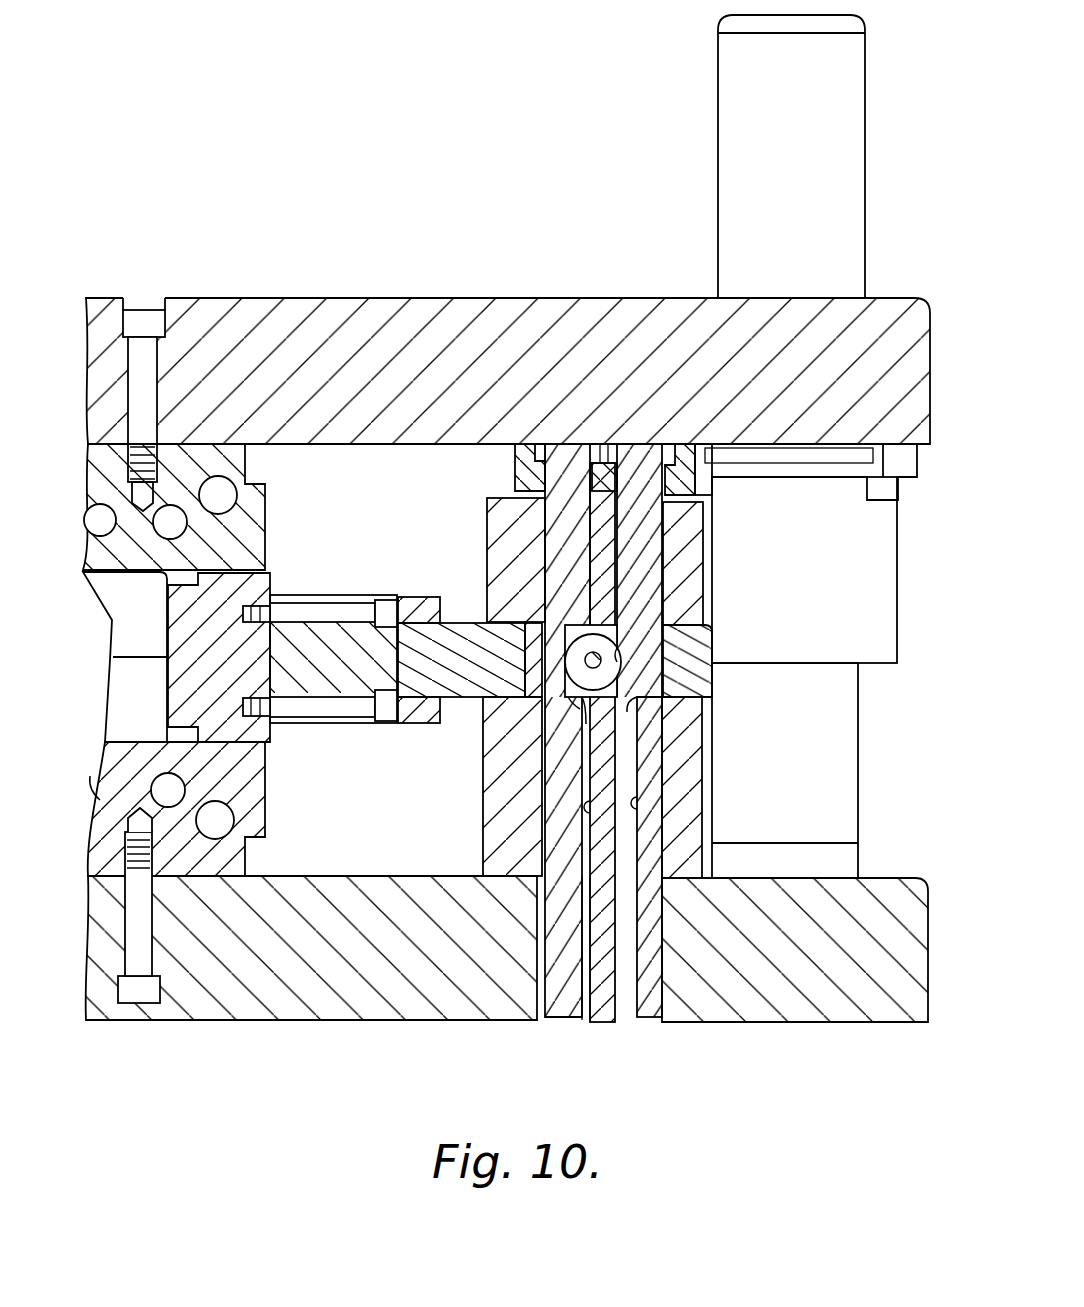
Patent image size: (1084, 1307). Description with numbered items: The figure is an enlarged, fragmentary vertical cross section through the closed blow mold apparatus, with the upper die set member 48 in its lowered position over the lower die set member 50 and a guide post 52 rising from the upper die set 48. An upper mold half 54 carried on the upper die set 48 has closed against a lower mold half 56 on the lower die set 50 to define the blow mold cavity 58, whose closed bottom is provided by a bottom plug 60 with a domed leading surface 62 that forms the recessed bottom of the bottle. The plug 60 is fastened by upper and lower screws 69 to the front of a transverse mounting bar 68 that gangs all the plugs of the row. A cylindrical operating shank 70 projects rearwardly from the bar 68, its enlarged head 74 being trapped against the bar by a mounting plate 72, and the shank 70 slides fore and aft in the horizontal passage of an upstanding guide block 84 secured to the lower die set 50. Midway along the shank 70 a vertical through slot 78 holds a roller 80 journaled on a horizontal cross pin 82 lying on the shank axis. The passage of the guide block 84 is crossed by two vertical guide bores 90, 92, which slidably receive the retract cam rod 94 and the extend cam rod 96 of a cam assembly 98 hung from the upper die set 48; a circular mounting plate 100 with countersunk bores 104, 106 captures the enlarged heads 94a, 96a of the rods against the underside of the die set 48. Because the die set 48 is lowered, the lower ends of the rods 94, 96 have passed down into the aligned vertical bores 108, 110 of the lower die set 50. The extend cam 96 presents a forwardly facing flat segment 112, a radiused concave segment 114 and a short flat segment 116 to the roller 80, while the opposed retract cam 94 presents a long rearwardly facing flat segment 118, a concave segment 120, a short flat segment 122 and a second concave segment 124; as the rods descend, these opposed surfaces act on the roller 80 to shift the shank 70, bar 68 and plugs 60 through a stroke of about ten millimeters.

The upper die set member 48 is at (893, 312).
The lower die set member 50 is at (885, 885).
The guide post 52 is at (848, 68).
The upper mold half 54 is at (258, 508).
The lower mold half 56 is at (253, 817).
The blow mold cavity 58 is at (152, 716).
The bottom plug 60 is at (190, 604).
The domed leading surface 62 is at (168, 645).
The mounting bar 68 is at (337, 680).
The screws 69 is at (300, 605).
The operating shank 70 is at (706, 637).
The mounting plate 72 is at (408, 600).
The enlarged head 74 is at (405, 700).
The through slot 78 is at (503, 647).
The roller 80 is at (612, 672).
The cross pin 82 is at (600, 655).
The guide block 84 is at (483, 805).
The guide bore 90 is at (585, 872).
The guide bore 92 is at (640, 905).
The retract cam rod 94 is at (542, 527).
The enlarged head 94a is at (533, 463).
The extend cam rod 96 is at (667, 590).
The enlarged head 96a is at (745, 447).
The cam assembly 98 is at (669, 548).
The mounting plate 100 is at (515, 452).
The countersunk bore 104 is at (485, 497).
The countersunk bore 106 is at (668, 498).
The vertical bore 108 is at (562, 1020).
The vertical bore 110 is at (618, 1020).
The flat follower-engaging segment 112 is at (660, 812).
The concave segment 114 is at (637, 710).
The short flat upright segment 116 is at (620, 655).
The flat upright segment 118 is at (583, 812).
The concave segment 120 is at (586, 709).
The short flat upright segment 122 is at (575, 697).
The second concave segment 124 is at (578, 628).